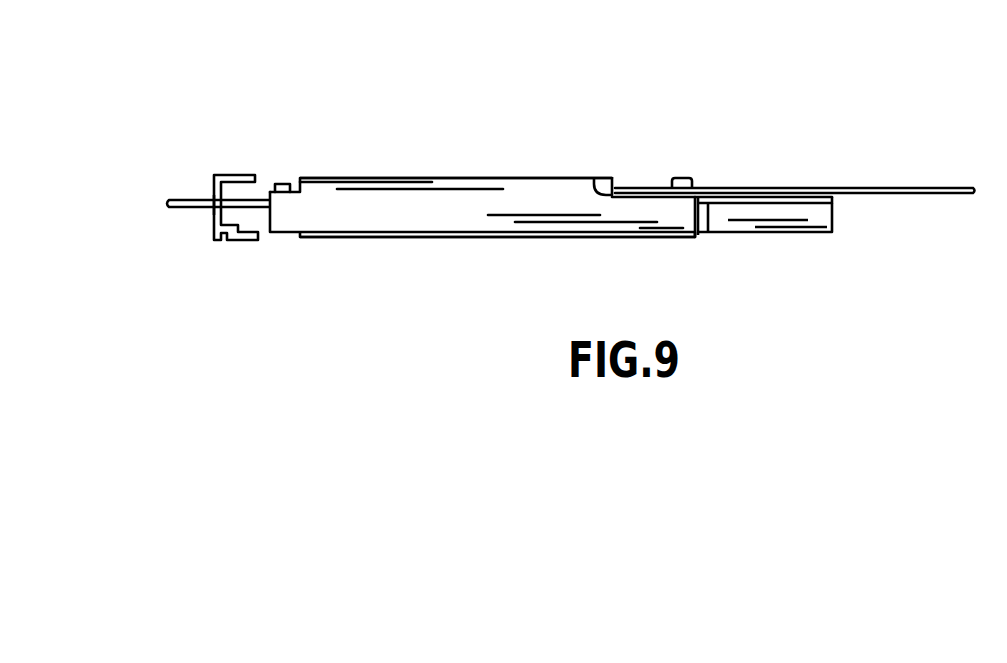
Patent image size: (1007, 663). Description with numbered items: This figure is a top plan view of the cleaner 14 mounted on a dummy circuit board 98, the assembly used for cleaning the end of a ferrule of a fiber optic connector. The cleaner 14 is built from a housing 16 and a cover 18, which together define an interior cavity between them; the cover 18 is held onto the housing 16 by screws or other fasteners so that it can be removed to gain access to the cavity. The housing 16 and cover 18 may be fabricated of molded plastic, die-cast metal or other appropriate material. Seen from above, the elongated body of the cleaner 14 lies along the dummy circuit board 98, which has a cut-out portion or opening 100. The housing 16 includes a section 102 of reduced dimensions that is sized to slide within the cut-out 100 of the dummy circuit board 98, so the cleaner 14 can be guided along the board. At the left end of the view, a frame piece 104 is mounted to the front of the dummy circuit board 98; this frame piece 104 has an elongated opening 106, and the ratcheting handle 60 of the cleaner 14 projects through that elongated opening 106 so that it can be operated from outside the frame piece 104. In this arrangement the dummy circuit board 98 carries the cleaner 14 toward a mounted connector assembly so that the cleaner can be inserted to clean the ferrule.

The cleaner 14 is at (410, 250).
The housing 16 is at (393, 200).
The cover 18 is at (518, 238).
The ratcheting handle 60 is at (175, 208).
The dummy circuit board 98 is at (877, 187).
The cut-out portion 100 is at (594, 178).
The section of reduced dimensions 102 is at (617, 183).
The frame piece 104 is at (233, 178).
The elongated opening 106 is at (213, 206).